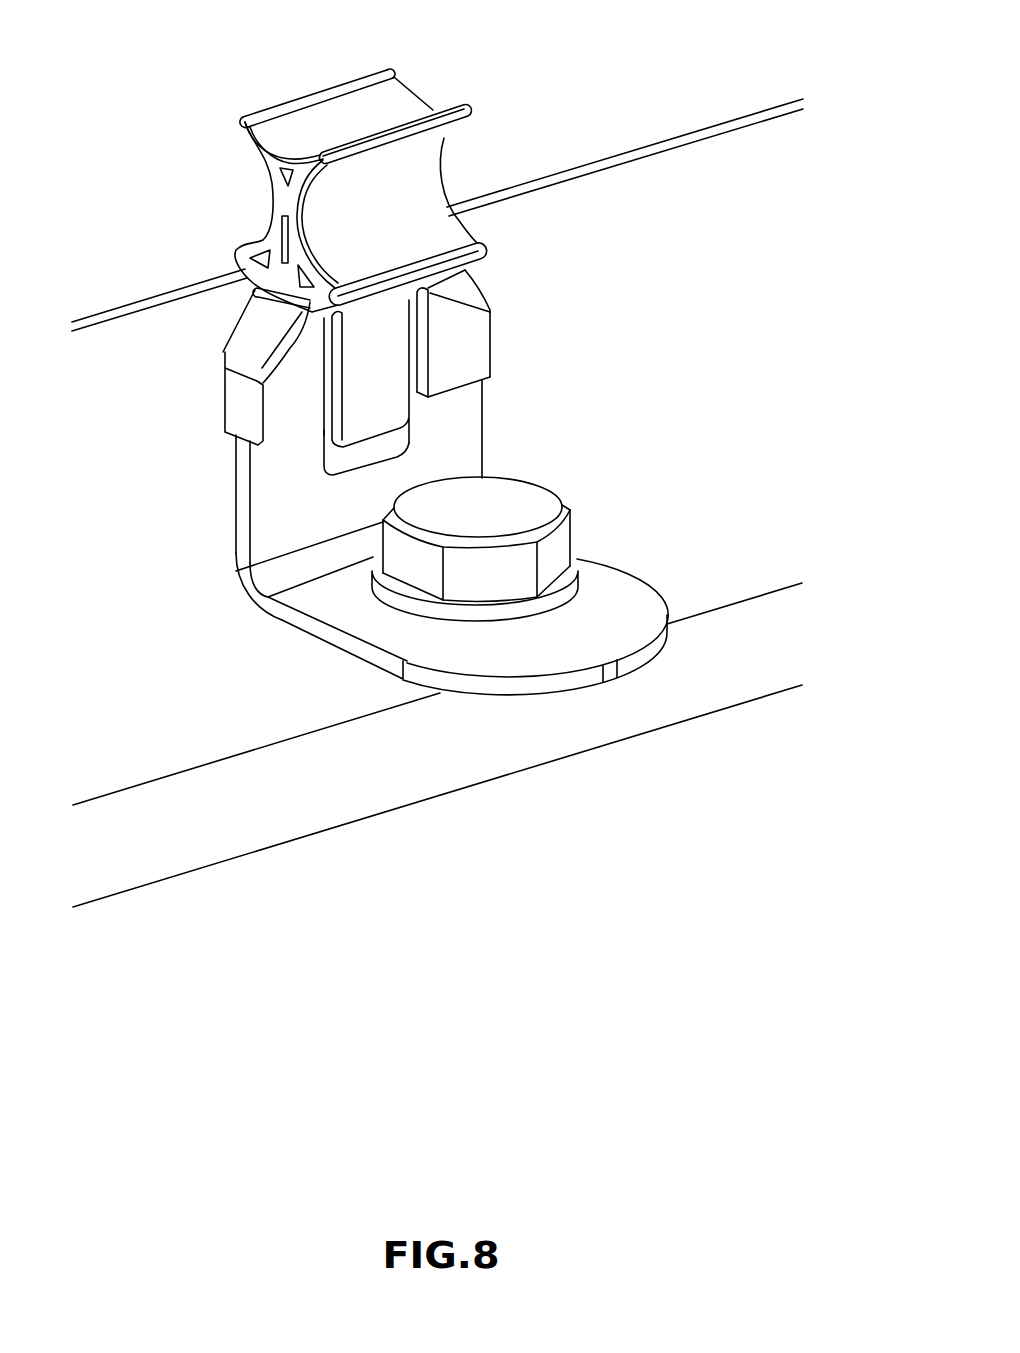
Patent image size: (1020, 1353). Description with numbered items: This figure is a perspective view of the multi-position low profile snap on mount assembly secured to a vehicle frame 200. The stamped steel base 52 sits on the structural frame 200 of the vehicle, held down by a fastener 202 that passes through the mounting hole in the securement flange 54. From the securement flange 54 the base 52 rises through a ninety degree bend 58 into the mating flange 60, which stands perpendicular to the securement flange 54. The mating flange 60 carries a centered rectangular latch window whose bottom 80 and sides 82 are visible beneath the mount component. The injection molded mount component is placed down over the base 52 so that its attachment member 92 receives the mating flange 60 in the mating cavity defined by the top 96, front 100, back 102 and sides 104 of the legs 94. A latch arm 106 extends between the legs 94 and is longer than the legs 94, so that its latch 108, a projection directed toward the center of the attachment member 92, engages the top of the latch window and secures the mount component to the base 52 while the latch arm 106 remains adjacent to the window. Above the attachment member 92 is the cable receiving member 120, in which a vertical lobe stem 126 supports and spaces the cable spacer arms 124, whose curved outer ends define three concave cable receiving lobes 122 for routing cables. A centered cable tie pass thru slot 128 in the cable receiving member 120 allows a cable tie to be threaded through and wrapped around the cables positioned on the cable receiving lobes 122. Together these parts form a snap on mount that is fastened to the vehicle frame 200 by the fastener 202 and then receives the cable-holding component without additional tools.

The base 52 is at (623, 580).
The securement flange 54 is at (447, 648).
The 90 degree bend 58 is at (313, 557).
The mating flange 60 is at (287, 533).
The bottom 80 is at (283, 592).
The sides 82 is at (320, 445).
The attachment member 92 is at (493, 305).
The legs 94 is at (460, 355).
The top 96 is at (252, 304).
The front 100 is at (483, 293).
The back 102 is at (226, 356).
The sides 104 is at (240, 395).
The latch arm 106 is at (380, 403).
The latch 108 is at (316, 412).
The cable receiving member 120 is at (475, 242).
The cable receiving lobes 122 is at (362, 107).
The cable spacer arms 124 is at (242, 122).
The lobe stem 126 is at (280, 220).
The cable tie pass thru slot 128 is at (467, 268).
The vehicle frame 200 is at (743, 587).
The fastener 202 is at (517, 502).